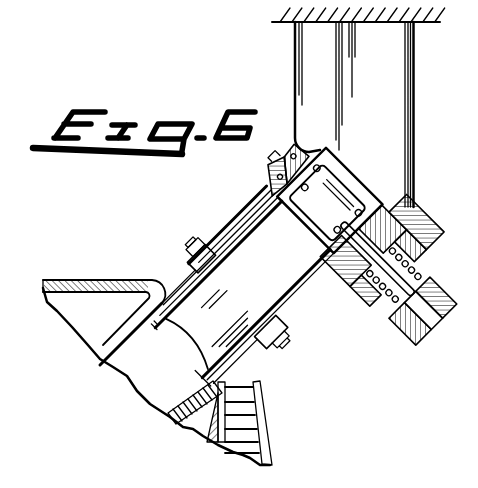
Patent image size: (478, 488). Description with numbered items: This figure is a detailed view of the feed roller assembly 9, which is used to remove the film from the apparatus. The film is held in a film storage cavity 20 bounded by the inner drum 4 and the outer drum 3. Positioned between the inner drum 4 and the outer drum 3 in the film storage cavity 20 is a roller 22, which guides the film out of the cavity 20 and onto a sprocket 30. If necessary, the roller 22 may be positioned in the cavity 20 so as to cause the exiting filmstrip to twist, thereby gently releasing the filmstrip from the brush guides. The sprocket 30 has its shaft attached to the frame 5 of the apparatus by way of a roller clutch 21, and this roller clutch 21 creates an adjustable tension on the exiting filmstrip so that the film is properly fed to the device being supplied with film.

The outer drum 3 is at (81, 279).
The inner drum 4 is at (258, 414).
The frame 5 is at (415, 58).
The feed roller assembly 9 is at (158, 212).
The film storage cavity 20 is at (142, 373).
The roller clutch 21 is at (418, 207).
The roller 22 is at (243, 258).
The sprocket 30 is at (332, 192).